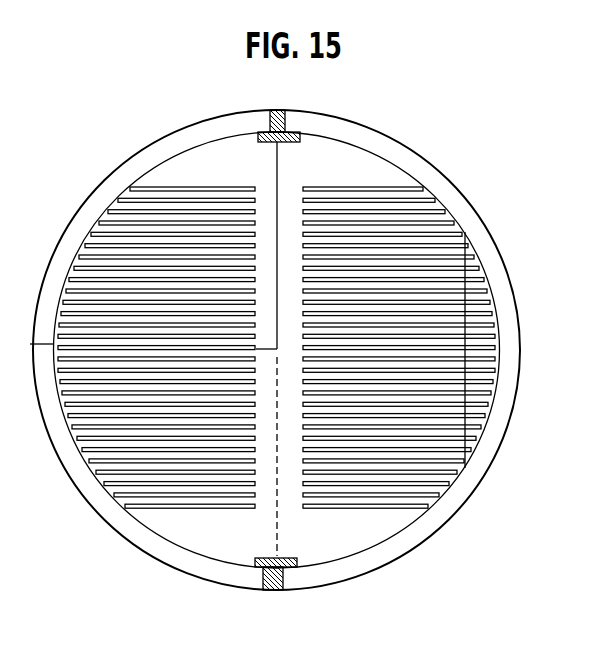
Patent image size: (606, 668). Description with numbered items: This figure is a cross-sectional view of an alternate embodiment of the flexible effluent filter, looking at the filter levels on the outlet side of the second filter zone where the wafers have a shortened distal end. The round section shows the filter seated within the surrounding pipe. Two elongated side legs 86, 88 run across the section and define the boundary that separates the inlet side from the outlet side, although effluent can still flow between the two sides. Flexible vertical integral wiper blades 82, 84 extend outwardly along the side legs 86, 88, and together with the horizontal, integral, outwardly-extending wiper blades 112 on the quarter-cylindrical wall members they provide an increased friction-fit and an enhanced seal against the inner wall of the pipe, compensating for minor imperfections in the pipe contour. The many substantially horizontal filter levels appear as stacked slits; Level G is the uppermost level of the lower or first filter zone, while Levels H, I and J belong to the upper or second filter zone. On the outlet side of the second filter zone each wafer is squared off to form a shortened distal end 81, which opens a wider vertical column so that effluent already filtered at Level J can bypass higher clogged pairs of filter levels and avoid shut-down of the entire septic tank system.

The horizontal integral outwardly-extending wiper blade 112 is at (158, 549).
The distal end 81 is at (473, 350).
The flexible vertical integral wiper blade 82 is at (275, 117).
The elongated side leg 86 is at (296, 145).
The elongated side leg 88 is at (268, 557).
The flexible vertical integral wiper blade 84 is at (288, 573).
The filter level G is at (217, 173).
The filter level H is at (478, 423).
The filter level I is at (210, 537).
The filter level J is at (353, 535).